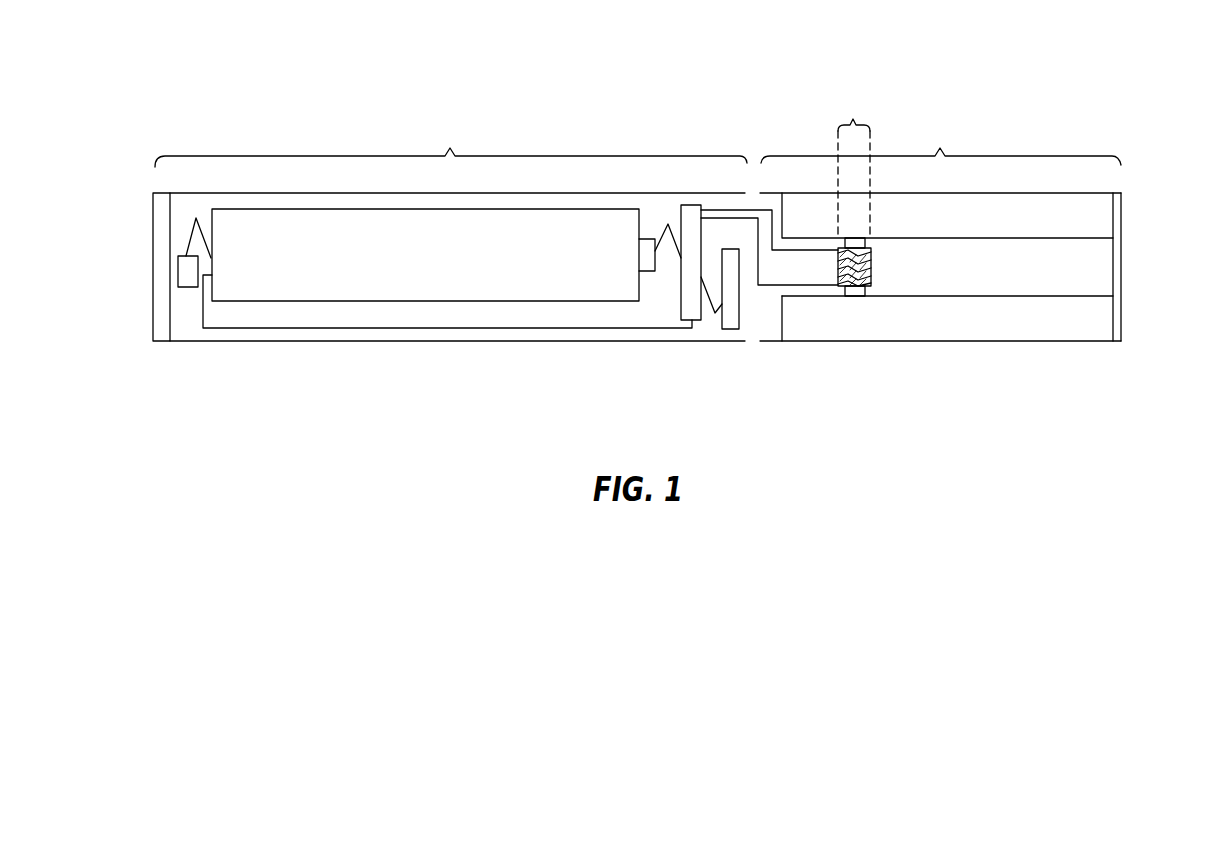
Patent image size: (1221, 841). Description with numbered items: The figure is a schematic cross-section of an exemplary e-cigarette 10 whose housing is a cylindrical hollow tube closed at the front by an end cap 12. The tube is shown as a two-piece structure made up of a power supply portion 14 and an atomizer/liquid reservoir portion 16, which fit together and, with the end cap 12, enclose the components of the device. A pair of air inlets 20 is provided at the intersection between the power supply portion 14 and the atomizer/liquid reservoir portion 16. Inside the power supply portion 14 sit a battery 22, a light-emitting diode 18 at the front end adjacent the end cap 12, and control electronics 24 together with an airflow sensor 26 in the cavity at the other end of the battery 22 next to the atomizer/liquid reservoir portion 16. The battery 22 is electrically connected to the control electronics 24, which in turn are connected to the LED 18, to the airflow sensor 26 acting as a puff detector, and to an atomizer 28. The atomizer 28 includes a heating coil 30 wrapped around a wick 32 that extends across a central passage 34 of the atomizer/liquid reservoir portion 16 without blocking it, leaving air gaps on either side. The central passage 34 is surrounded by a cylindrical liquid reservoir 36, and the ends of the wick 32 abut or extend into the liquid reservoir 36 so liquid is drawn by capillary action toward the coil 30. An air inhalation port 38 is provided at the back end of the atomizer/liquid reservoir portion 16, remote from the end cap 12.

The e-cigarette 10 is at (567, 80).
The end cap 12 is at (163, 328).
The power supply portion 14 is at (451, 143).
The atomizer/liquid reservoir portion 16 is at (941, 142).
The light-emitting diode 18 is at (190, 287).
The air inlets 20 is at (753, 191).
The battery 22 is at (352, 280).
The control electronics 24 is at (692, 204).
The airflow sensor 26 is at (730, 329).
The atomizer 28 is at (854, 166).
The heating coil 30 is at (867, 281).
The wick 32 is at (855, 292).
The central passage 34 is at (948, 282).
The cylindrical liquid reservoir 36 is at (1097, 213).
The air inhalation port 38 is at (1121, 265).